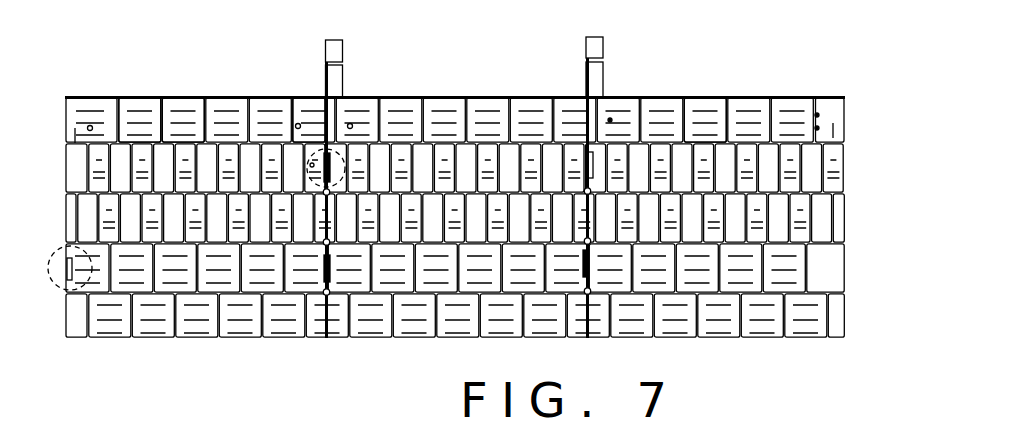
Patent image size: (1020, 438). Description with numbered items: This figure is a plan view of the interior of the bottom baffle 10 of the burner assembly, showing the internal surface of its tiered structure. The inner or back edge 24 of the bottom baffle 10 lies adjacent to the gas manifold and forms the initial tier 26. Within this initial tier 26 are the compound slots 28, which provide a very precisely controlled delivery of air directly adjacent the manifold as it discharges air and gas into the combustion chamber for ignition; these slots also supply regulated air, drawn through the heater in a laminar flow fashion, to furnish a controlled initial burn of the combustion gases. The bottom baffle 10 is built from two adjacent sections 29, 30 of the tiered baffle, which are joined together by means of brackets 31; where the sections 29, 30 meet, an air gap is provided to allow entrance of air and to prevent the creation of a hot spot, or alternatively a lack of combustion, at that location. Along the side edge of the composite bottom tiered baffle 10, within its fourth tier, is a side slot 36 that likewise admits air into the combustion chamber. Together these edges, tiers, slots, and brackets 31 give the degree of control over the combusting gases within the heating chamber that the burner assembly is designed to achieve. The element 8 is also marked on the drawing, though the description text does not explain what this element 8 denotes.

The connecting pin 8 is at (344, 161).
The modular wall structure 10 is at (850, 217).
The block 24 is at (178, 97).
The block with aperture 26 is at (141, 118).
The block 28 is at (685, 108).
The post channel 29 is at (319, 125).
The connector assembly 30 is at (333, 153).
The post 31 is at (325, 53).
The connector 36 is at (72, 290).